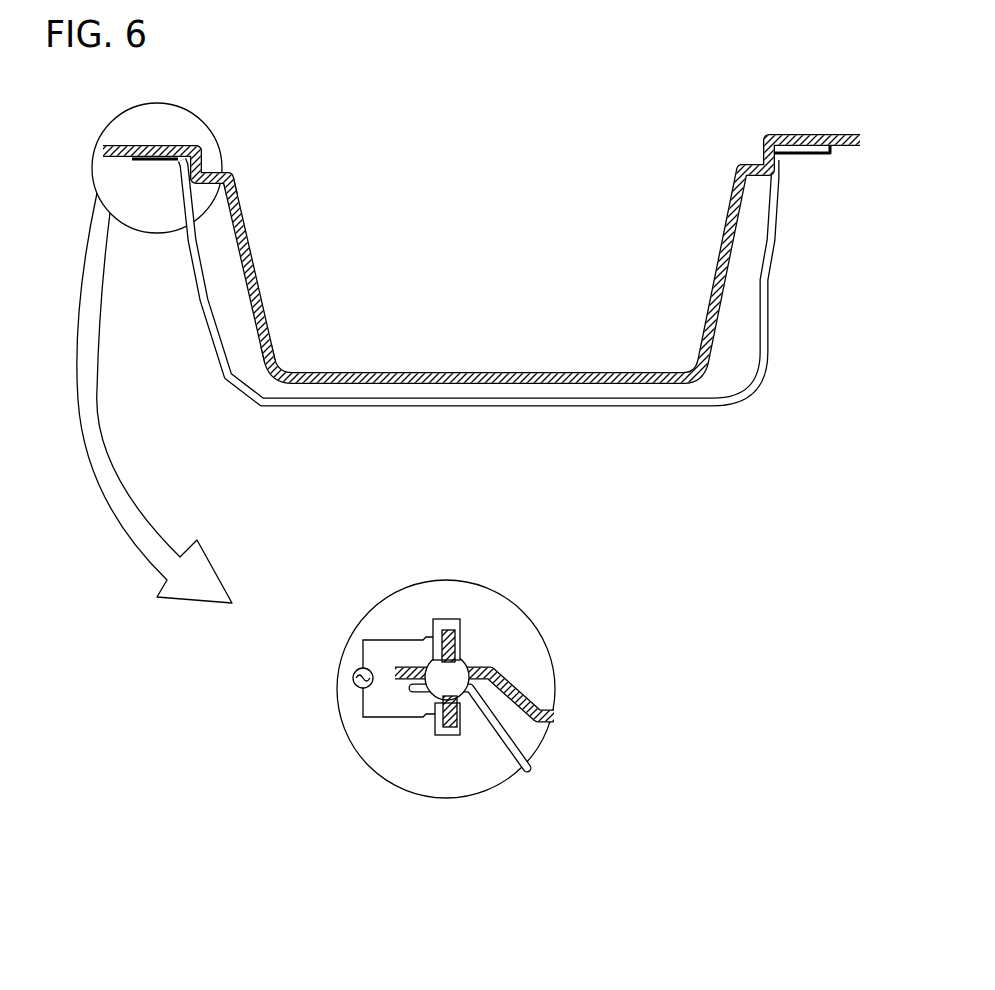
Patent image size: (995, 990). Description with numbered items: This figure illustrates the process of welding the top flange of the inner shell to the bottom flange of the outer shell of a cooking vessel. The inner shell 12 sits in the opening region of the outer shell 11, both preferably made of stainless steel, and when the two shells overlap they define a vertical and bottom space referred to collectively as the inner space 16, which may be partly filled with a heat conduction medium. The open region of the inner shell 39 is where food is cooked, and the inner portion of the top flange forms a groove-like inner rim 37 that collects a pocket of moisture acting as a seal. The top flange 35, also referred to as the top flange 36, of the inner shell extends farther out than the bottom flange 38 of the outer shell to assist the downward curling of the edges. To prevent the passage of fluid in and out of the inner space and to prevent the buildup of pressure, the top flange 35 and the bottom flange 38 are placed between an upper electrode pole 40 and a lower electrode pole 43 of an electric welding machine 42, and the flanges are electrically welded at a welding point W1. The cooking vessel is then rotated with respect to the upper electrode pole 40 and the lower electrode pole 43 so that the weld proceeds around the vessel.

The outer shell 11 is at (222, 377).
The inner shell 12 is at (277, 365).
The inner space 16 is at (227, 280).
The top flange 35 is at (102, 145).
The top flange 36 is at (188, 147).
The inner rim 37 is at (221, 177).
The bottom flange 38 is at (162, 162).
The inner shell 39 is at (488, 357).
The upper electrode pole 40 is at (442, 618).
The electric welding machine 42 is at (352, 685).
The lower electrode pole 43 is at (451, 735).
The welding point W1 is at (468, 662).